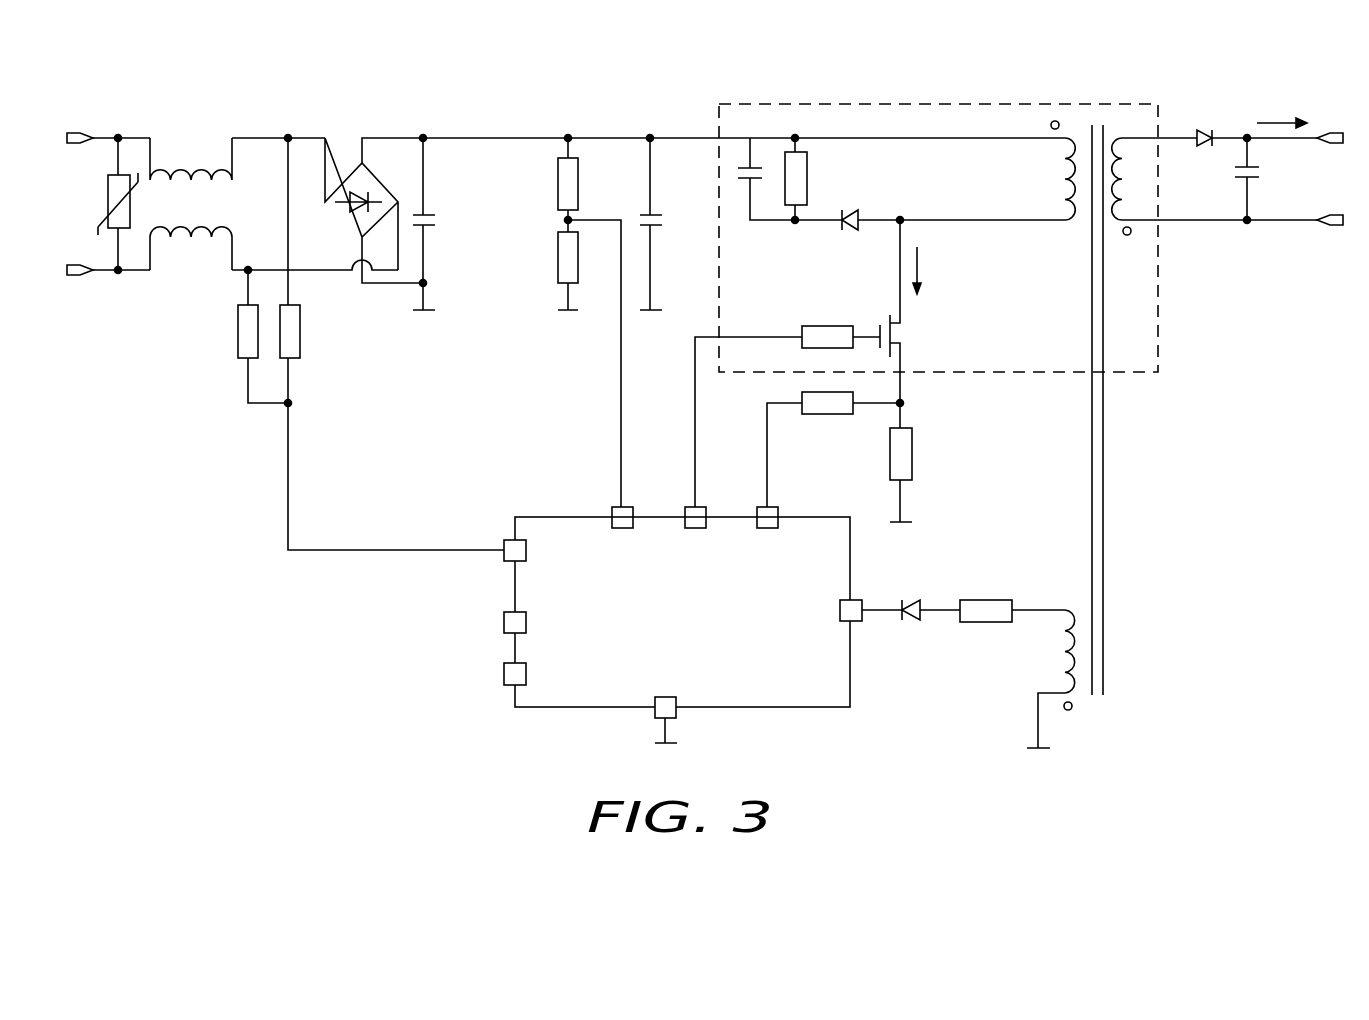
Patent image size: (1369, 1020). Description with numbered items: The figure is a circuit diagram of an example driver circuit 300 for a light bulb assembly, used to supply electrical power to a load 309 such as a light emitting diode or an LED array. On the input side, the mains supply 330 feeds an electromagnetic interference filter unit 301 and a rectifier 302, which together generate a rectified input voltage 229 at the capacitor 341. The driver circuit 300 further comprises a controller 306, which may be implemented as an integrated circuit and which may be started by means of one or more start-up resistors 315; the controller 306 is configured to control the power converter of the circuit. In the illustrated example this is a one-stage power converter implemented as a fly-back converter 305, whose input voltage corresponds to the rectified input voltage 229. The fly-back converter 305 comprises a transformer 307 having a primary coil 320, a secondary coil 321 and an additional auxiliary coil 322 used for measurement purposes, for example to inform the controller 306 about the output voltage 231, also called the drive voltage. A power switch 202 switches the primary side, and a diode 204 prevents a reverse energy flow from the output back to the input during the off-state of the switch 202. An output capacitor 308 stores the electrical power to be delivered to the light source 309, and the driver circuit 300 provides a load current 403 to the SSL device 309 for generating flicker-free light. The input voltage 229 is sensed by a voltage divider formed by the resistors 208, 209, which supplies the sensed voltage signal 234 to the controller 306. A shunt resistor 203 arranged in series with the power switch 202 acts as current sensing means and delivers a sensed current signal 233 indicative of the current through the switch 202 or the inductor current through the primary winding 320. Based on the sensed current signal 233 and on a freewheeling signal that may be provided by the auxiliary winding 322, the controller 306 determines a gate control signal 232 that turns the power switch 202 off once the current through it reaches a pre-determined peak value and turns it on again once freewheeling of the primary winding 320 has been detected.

The driver circuit 300 is at (325, 633).
The electromagnetic interference filter unit 301 is at (193, 243).
The rectifier 302 is at (353, 163).
The mains supply 330 is at (88, 213).
The capacitor 341 is at (436, 213).
The start-up resistors 315 is at (301, 343).
The rectified input voltage 229 is at (397, 135).
The resistor 208 is at (580, 193).
The resistor 209 is at (558, 247).
The fly-back converter 305 is at (1160, 350).
The primary coil 320 is at (1065, 165).
The secondary coil 321 is at (1130, 164).
The auxiliary coil 322 is at (1068, 642).
The transformer 307 is at (1140, 449).
The power switch 202 is at (907, 337).
The shunt resistor 203 is at (914, 455).
The diode 204 is at (1192, 129).
The output voltage 231 is at (1233, 131).
The load current 403 is at (1280, 120).
The output capacitor 308 is at (1232, 171).
The load 309 is at (1300, 172).
The gate control signal 232 is at (690, 455).
The sensed current signal 233 is at (768, 455).
The sensed voltage signal 234 is at (620, 451).
The controller 306 is at (597, 709).